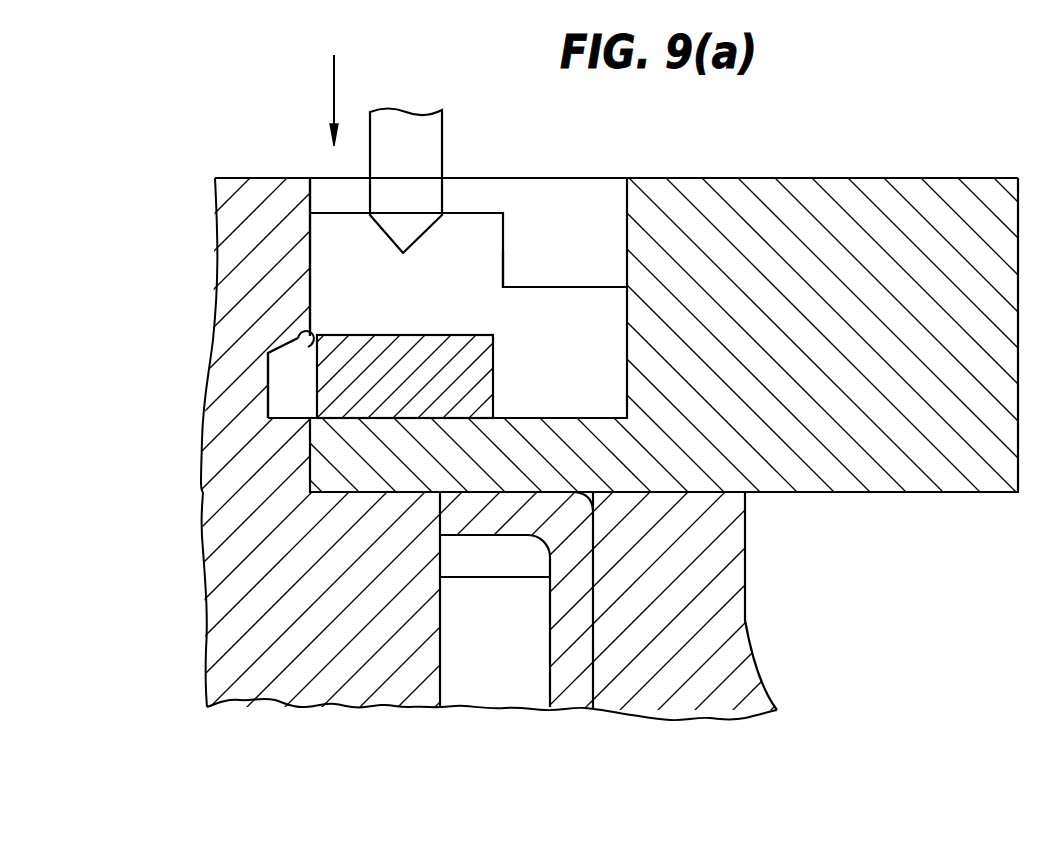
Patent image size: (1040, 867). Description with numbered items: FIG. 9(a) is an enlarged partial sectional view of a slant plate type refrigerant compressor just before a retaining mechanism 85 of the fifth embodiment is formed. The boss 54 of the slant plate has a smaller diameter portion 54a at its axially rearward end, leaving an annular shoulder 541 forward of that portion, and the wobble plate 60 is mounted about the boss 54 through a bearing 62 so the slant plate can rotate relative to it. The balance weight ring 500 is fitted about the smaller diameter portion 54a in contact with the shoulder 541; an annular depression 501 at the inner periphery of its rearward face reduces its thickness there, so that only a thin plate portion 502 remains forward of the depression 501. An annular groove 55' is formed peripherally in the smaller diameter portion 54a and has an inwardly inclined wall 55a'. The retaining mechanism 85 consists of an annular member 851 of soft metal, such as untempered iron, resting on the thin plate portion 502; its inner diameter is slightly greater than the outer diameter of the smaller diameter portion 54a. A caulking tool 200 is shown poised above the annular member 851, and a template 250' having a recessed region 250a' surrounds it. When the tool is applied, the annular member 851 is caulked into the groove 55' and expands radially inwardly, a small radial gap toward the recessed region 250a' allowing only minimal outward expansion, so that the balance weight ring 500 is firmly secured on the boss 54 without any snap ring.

The smaller diameter portion 54a is at (264, 186).
The caulking tool 200 is at (442, 140).
The template 250' is at (468, 206).
The recessed region 250a' is at (584, 206).
The annular depression 501 is at (598, 327).
The retaining mechanism 85 is at (469, 335).
The annular member 851 is at (416, 335).
The annular groove 55' is at (221, 378).
The inwardly inclined wall 55a' is at (335, 306).
The thin plate portion 502 is at (312, 455).
The balance weight ring 500 is at (895, 494).
The annular shoulder 541 is at (393, 493).
The boss 54 is at (393, 692).
The bearing 62 is at (502, 692).
The wobble plate 60 is at (664, 686).